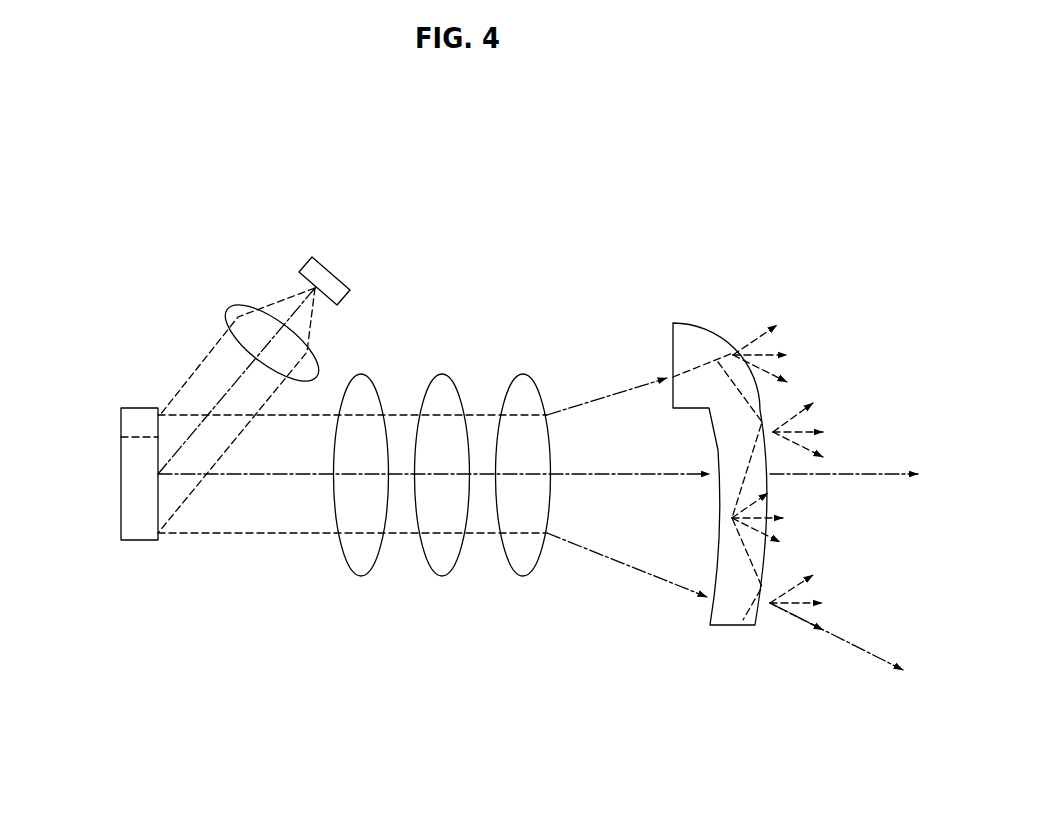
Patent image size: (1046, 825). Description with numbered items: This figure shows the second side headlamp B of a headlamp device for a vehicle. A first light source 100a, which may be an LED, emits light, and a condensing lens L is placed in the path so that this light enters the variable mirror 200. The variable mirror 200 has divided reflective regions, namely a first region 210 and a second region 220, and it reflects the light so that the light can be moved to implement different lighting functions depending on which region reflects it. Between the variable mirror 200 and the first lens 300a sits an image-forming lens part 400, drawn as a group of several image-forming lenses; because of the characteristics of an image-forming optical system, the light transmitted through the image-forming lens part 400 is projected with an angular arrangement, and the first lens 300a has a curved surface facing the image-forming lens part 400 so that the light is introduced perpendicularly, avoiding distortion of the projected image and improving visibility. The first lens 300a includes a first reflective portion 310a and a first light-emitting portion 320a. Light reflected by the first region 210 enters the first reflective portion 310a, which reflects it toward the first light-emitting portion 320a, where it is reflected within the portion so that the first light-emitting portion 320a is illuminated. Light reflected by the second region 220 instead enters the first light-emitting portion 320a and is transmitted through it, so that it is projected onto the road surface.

The second side headlamp B is at (113, 168).
The first light source 100a is at (312, 246).
The condensing lens L is at (240, 302).
The variable mirror 200 is at (87, 478).
The first region 210 is at (139, 420).
The second region 220 is at (135, 530).
The image-forming lens part 400 is at (552, 599).
The first lens 300a is at (766, 470).
The first reflective portion 310a is at (710, 377).
The first light-emitting portion 320a is at (732, 612).